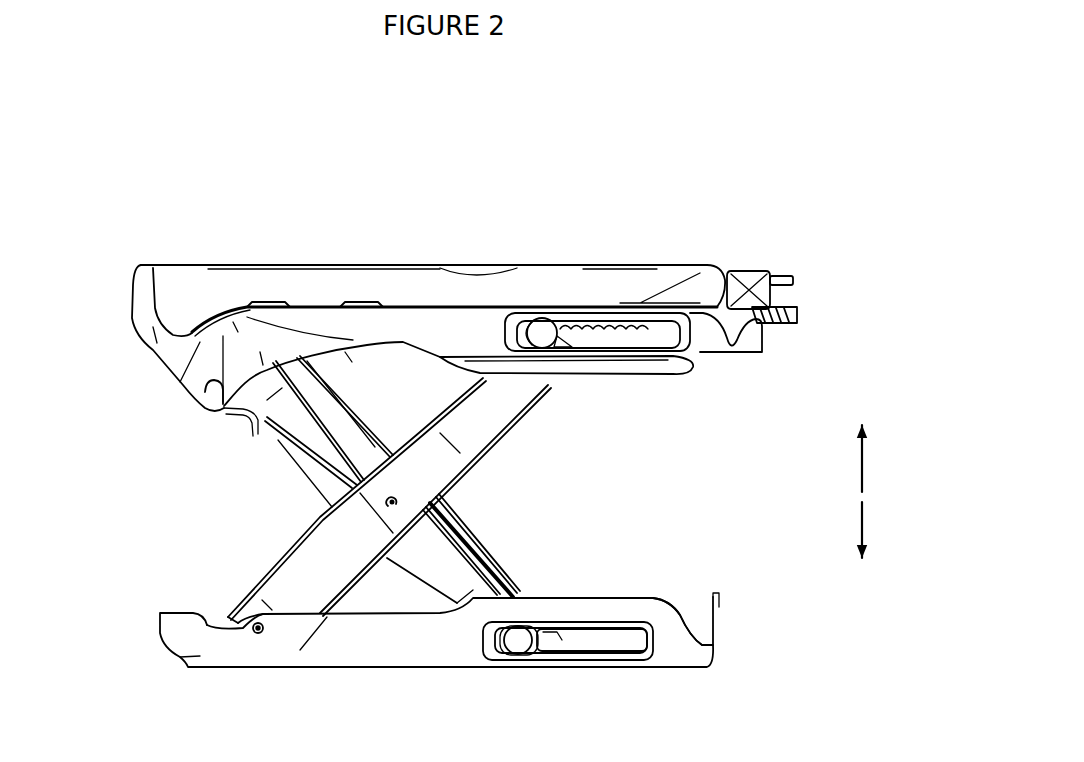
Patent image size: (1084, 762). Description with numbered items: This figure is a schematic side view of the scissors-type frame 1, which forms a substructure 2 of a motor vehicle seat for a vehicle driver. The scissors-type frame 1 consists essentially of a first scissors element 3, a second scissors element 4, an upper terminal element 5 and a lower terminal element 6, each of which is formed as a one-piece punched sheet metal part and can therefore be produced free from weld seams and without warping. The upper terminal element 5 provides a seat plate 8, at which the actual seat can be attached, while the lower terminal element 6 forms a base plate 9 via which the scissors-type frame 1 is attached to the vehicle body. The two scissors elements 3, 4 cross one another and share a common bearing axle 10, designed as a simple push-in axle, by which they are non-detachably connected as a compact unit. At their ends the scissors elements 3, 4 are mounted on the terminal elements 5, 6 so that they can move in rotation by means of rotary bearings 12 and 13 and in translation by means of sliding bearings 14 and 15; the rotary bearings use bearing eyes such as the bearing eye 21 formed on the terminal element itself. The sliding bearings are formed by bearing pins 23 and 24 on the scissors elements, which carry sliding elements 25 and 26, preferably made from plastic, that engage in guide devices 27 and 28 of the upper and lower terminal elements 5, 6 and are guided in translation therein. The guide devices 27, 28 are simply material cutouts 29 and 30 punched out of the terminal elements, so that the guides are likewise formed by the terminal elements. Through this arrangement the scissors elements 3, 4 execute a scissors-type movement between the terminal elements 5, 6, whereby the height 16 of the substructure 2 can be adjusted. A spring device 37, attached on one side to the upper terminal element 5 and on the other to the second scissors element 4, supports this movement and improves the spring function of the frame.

The scissors-type frame 1 is at (749, 186).
The substructure 2 is at (659, 205).
The first scissors element 3 is at (268, 437).
The second scissors element 4 is at (286, 566).
The upper terminal element 5 is at (400, 282).
The lower terminal element 6 is at (200, 657).
The seat plate 8 is at (298, 262).
The base plate 9 is at (362, 670).
The common bearing axle 10 is at (398, 502).
The rotary bearing 12 is at (205, 390).
The rotary bearing 13 is at (258, 636).
The sliding bearing 14 is at (579, 392).
The sliding bearing 15 is at (517, 682).
The height 16 is at (866, 497).
The bearing eye 21 is at (240, 639).
The bearing pin 23 is at (497, 662).
The bearing pin 24 is at (529, 313).
The sliding element 25 is at (522, 641).
The sliding element 26 is at (545, 331).
The guide device 27 is at (654, 367).
The guide device 28 is at (642, 675).
The material cutout 29 is at (656, 338).
The material cutout 30 is at (623, 634).
The spring device 37 is at (619, 328).